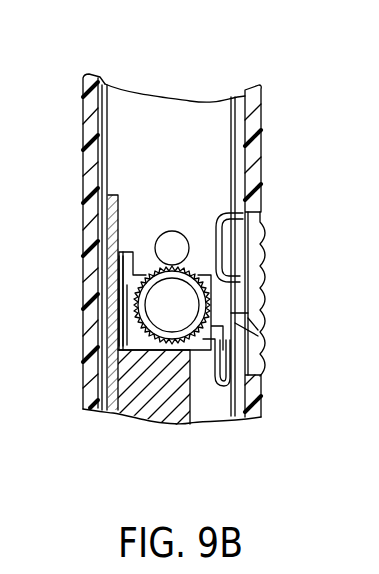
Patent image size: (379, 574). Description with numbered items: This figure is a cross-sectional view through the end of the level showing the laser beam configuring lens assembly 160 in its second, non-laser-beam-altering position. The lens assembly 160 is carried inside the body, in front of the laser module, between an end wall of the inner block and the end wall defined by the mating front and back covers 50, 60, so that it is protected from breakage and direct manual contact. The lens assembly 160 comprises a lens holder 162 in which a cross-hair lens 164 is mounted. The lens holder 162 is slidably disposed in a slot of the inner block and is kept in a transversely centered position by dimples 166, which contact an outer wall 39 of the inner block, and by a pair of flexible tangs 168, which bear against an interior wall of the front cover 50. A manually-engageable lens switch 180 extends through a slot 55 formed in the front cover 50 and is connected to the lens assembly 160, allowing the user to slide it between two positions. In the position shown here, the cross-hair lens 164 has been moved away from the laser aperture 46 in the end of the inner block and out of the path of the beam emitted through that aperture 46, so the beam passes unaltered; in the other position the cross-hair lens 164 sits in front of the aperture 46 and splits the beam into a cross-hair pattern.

The outer wall 39 is at (112, 230).
The aperture 46 is at (178, 240).
The front cover 50 is at (263, 111).
The slot 55 is at (250, 235).
The back cover 60 is at (90, 393).
The laser beam configuring lens assembly 160 is at (134, 240).
The lens holder 162 is at (193, 352).
The cross-hair lens 164 is at (141, 262).
The dimples 166 is at (124, 261).
The flexible tangs 168 is at (246, 212).
The lens switch 180 is at (276, 242).